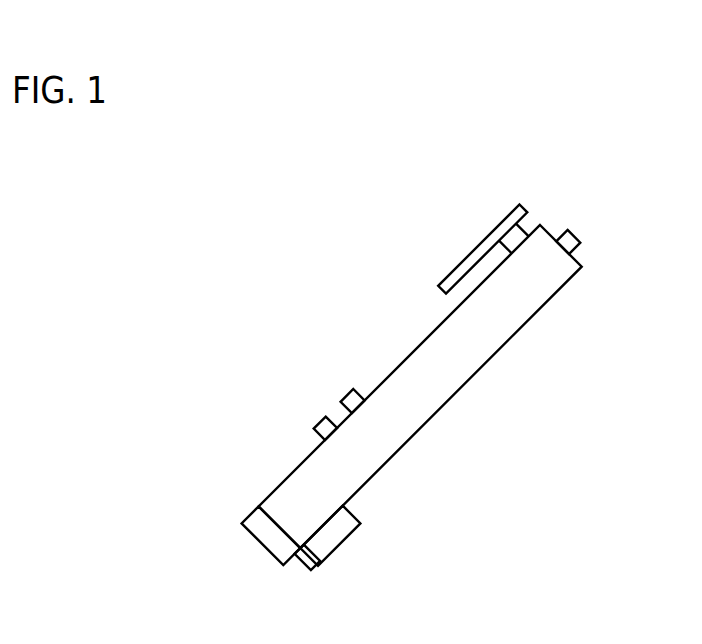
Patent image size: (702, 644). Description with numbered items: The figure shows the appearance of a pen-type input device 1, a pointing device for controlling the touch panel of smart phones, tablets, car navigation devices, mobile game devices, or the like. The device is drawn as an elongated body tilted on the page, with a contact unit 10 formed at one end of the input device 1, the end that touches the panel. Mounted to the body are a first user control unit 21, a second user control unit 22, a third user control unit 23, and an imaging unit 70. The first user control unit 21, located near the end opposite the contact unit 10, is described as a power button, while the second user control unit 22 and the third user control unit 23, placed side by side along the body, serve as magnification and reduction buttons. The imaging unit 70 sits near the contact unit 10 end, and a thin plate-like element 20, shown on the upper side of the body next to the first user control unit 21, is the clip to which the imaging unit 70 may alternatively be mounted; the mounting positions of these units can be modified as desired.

The pen-type input device 1 is at (420, 352).
The contact unit 10 is at (256, 512).
The clip plate 20 is at (483, 249).
The first user control unit 21 is at (572, 230).
The second user control unit 22 is at (349, 391).
The third user control unit 23 is at (322, 418).
The imaging unit 70 is at (352, 542).